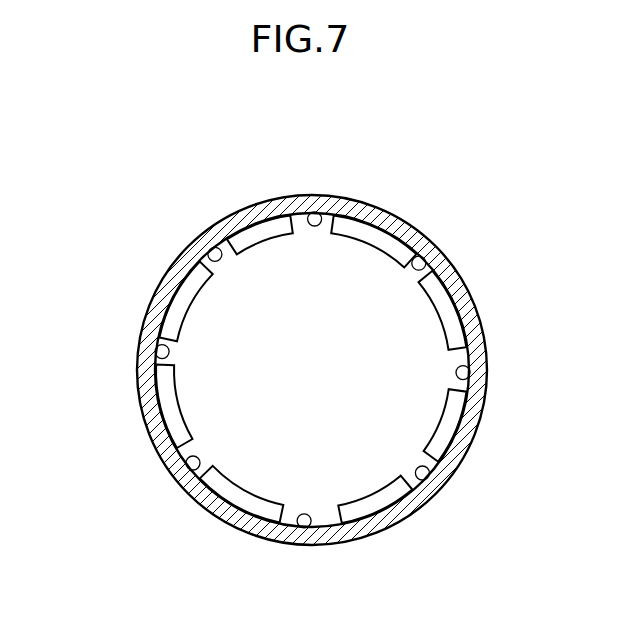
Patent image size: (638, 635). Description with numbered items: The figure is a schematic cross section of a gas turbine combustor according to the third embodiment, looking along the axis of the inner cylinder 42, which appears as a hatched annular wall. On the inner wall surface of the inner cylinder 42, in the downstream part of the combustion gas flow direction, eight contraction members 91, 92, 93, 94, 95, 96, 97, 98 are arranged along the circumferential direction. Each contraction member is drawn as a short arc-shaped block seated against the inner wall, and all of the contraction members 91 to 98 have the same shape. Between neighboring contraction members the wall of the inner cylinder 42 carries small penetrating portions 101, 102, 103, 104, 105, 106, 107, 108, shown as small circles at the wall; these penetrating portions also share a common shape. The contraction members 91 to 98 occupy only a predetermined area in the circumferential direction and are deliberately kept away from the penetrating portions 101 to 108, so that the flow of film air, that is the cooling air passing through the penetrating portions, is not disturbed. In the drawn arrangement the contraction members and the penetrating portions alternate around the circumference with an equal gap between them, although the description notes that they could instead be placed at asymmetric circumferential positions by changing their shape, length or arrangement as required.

The inner cylinder 42 is at (358, 211).
The contraction member 91 is at (390, 242).
The contraction member 92 is at (447, 318).
The contraction member 93 is at (448, 432).
The contraction member 94 is at (378, 500).
The contraction member 95 is at (235, 498).
The contraction member 96 is at (167, 413).
The contraction member 97 is at (180, 298).
The contraction member 98 is at (243, 237).
The penetrating portion 101 is at (433, 263).
The penetrating portion 102 is at (472, 382).
The penetrating portion 103 is at (421, 494).
The penetrating portion 104 is at (297, 530).
The penetrating portion 105 is at (190, 490).
The penetrating portion 106 is at (157, 357).
The penetrating portion 107 is at (213, 257).
The penetrating portion 108 is at (313, 212).